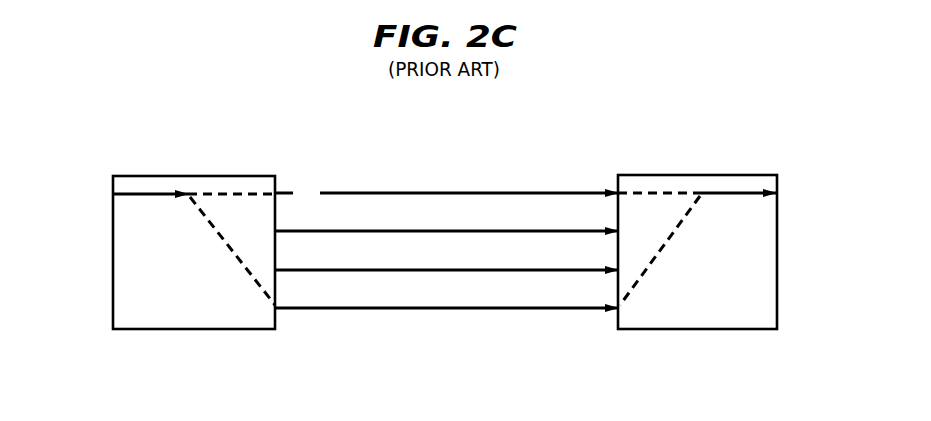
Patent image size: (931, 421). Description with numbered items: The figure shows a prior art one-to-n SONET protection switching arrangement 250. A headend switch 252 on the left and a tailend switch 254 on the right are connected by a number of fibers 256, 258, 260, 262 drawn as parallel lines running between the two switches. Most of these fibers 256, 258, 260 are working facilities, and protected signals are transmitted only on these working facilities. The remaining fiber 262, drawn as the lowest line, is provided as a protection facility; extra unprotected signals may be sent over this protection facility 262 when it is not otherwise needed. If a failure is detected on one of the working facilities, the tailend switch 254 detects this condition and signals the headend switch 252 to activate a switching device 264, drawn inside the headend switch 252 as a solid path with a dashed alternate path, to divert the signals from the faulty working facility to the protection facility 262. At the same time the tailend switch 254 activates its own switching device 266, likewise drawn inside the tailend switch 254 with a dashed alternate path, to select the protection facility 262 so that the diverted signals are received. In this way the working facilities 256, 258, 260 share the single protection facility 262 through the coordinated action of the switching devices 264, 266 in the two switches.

The 1:n arrangement 250 is at (720, 90).
The headend switch 252 is at (148, 176).
The tailend switch 254 is at (703, 175).
The fiber 256 is at (393, 193).
The fiber 258 is at (452, 231).
The fiber 260 is at (528, 270).
The protection facility 262 is at (402, 310).
The switching device 264 is at (135, 196).
The switching device 266 is at (660, 252).